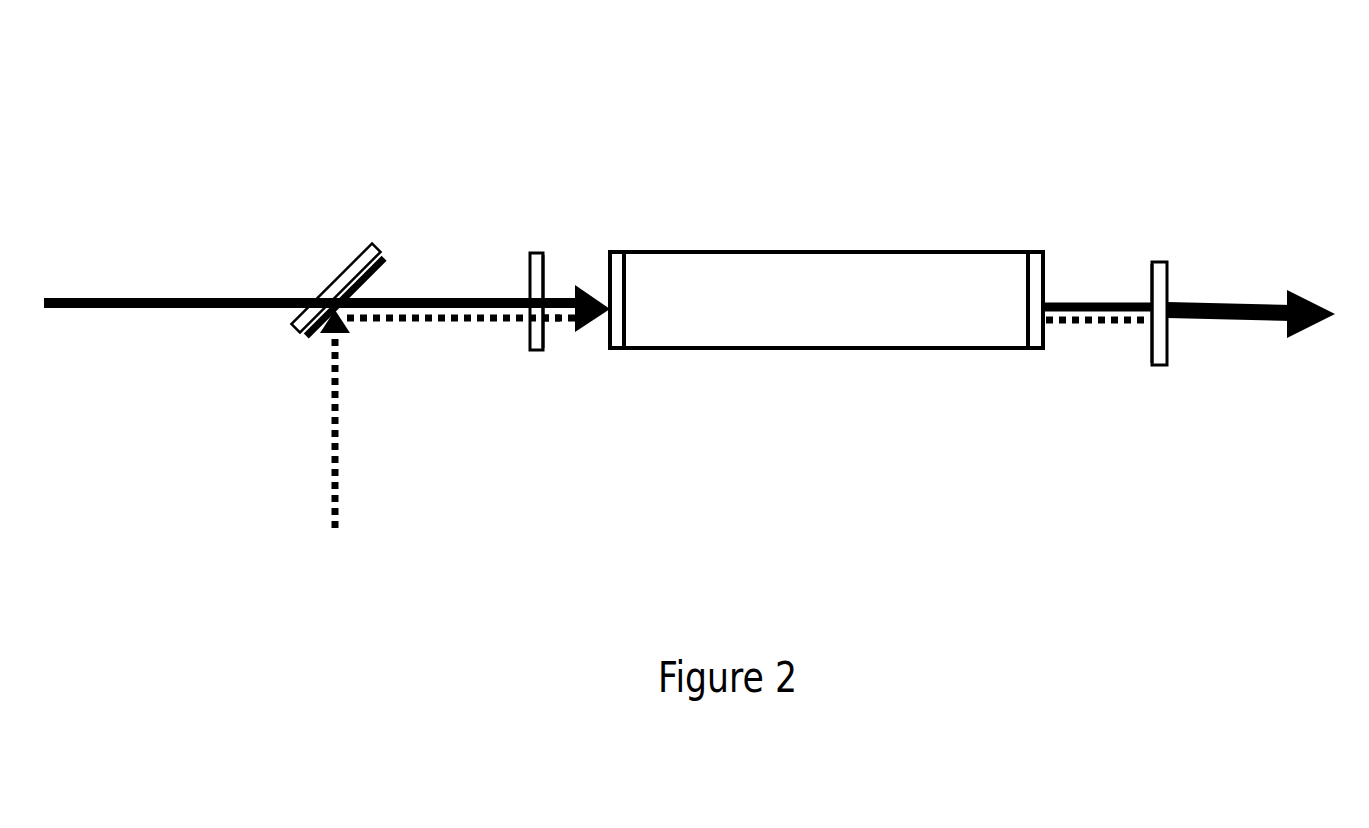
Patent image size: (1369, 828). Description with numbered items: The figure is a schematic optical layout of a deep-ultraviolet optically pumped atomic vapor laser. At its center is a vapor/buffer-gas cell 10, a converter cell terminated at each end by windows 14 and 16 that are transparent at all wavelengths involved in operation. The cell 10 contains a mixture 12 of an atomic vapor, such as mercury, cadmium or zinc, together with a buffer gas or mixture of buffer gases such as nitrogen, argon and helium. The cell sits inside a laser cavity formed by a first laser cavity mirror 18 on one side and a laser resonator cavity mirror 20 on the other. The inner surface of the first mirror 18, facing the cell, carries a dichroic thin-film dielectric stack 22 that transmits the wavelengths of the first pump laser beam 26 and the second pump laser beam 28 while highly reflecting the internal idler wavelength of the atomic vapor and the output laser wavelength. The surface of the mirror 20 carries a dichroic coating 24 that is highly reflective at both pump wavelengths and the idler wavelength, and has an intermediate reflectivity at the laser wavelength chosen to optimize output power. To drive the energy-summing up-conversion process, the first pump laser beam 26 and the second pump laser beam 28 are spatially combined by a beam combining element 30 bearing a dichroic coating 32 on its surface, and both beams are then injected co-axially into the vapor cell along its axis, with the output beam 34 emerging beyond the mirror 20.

The vapor/buffer-gas cell 10 is at (722, 250).
The mixture of atomic vapor and buffer gas 12 is at (862, 292).
The window 14 is at (607, 267).
The window 16 is at (1048, 275).
The first laser cavity mirror 18 is at (527, 258).
The laser resonator cavity mirror 20 is at (1168, 263).
The dichroic thin-film dielectric stack 22 is at (547, 340).
The dichroic coating 24 is at (1152, 350).
The first pump laser beam 26 is at (170, 297).
The second pump laser beam 28 is at (335, 478).
The beam combining element 30 is at (350, 265).
The dichroic coating 32 is at (392, 265).
The output beam 34 is at (1240, 318).